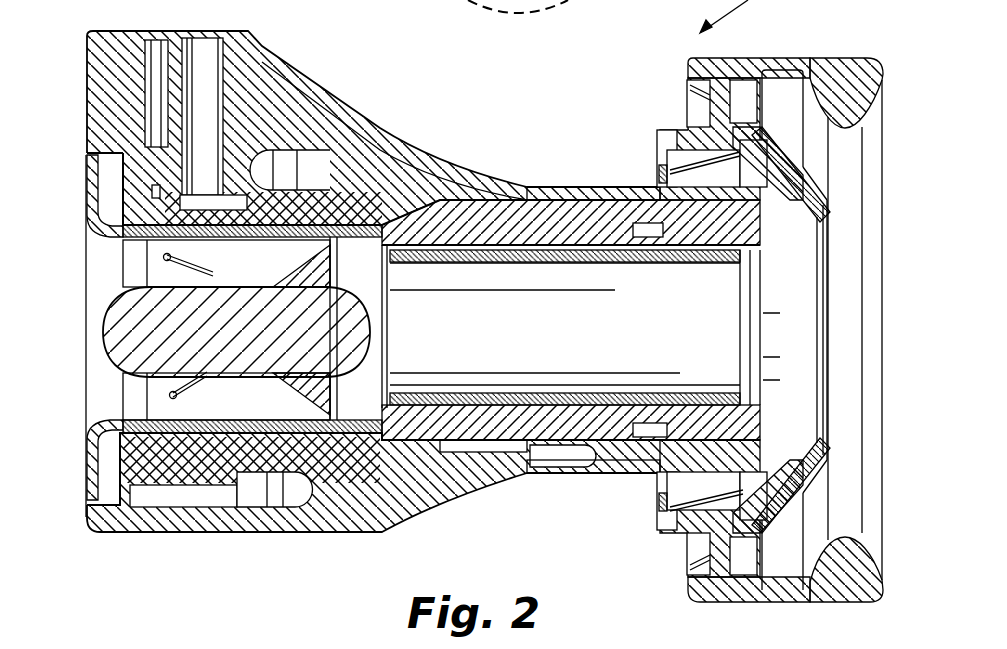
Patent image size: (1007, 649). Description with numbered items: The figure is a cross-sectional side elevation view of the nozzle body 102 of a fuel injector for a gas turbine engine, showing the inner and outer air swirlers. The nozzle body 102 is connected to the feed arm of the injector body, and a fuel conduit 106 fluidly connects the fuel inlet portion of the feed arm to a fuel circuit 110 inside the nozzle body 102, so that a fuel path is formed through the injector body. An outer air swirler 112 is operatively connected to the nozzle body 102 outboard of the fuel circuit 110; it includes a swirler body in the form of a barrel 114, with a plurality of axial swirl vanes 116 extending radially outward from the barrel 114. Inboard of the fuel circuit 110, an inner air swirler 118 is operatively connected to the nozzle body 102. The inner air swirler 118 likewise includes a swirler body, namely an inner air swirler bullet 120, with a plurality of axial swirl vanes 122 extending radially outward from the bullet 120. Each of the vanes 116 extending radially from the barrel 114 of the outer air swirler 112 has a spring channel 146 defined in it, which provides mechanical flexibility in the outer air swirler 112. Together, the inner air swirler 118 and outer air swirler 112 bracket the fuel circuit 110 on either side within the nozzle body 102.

The nozzle body 102 is at (487, 177).
The fuel conduit 106 is at (254, 52).
The fuel circuit 110 is at (650, 437).
The outer air swirler 112 is at (688, 130).
The barrel 114 is at (627, 200).
The axial swirl vanes 116 is at (668, 163).
The inner air swirler 118 is at (107, 305).
The inner air swirler bullet 120 is at (250, 341).
The axial swirl vanes 122 is at (303, 265).
The spring channel 146 is at (682, 125).